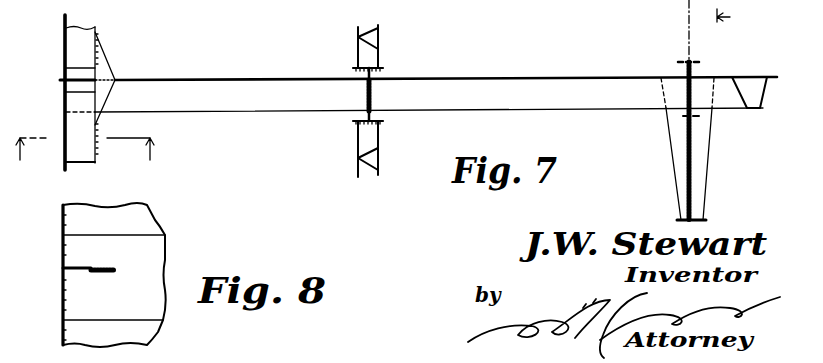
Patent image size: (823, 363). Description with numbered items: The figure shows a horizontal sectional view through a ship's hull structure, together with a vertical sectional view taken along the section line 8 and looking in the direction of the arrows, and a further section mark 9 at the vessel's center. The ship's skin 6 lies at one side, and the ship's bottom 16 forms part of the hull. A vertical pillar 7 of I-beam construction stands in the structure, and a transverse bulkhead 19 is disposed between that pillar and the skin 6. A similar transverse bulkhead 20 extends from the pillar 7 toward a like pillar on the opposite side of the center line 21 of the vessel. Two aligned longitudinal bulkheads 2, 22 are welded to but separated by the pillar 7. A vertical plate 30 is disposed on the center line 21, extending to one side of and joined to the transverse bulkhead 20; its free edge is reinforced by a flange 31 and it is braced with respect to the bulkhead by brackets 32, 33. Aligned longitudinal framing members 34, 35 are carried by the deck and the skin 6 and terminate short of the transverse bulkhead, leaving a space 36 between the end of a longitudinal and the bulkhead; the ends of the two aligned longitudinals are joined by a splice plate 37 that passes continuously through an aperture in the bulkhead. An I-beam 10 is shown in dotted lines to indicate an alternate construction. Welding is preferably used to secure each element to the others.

In FIG. 7, the longitudinal bulkhead 2 is at (380, 140).
In FIG. 7, the ship's skin 6 is at (65, 43).
In FIG. 8, the ship's skin 6 is at (63, 223).
In FIG. 7, the vertical pillar 7 is at (385, 68).
In FIG. 7, the section line 8— 8 is at (89, 153).
In FIG. 7, the section line 9- 9 is at (727, 22).
In FIG. 7, the I-beam 10 is at (680, 62).
In FIG. 7, the ship's bottom 16 is at (429, 6).
In FIG. 7, the transverse bulkhead 19 is at (264, 88).
In FIG. 8, the transverse bulkhead 19 is at (165, 250).
In FIG. 7, the transverse bulkhead 20 is at (556, 85).
In FIG. 7, the center line 21 is at (689, 13).
In FIG. 7, the longitudinal bulkhead 22 is at (381, 56).
In FIG. 7, the vertical plate 30 is at (695, 152).
In FIG. 7, the flange 31 is at (705, 222).
In FIG. 7, the bracket 32 is at (670, 140).
In FIG. 7, the bracket 33 is at (712, 134).
In FIG. 7, the longitudinal framing member 34 is at (88, 28).
In FIG. 7, the longitudinal framing member 35 is at (92, 150).
In FIG. 8, the longitudinal framing member 35 is at (84, 265).
In FIG. 7, the space 36 is at (65, 92).
In FIG. 7, the splice plate 37 is at (104, 63).
In FIG. 8, the splice plate 37 is at (110, 266).